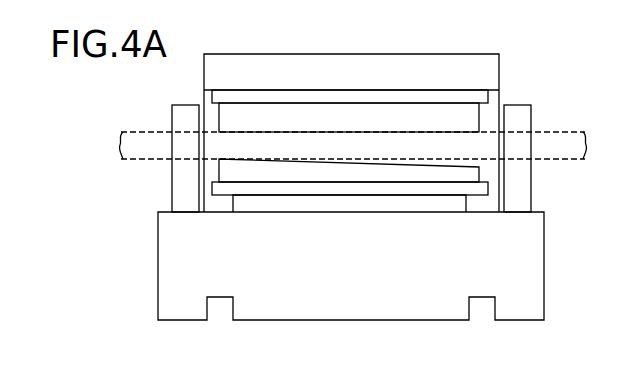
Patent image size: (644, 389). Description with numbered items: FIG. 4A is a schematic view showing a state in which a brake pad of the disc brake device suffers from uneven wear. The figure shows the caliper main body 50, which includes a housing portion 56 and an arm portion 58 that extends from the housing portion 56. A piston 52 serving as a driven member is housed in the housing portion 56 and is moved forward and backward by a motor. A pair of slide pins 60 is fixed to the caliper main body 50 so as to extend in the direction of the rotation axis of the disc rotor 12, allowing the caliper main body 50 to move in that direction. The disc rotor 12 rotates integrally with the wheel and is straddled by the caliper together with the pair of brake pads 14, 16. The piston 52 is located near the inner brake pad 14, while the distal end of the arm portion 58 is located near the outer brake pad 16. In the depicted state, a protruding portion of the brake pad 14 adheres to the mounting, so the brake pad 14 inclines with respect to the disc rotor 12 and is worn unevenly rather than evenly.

The caliper main body 50 is at (141, 257).
The disc rotor 12 is at (561, 138).
The brake pad 14 is at (493, 175).
The brake pad 16 is at (491, 103).
The piston 52 is at (298, 207).
The housing portion 56 is at (532, 268).
The arm portion 58 is at (456, 61).
The slide pin 60 is at (184, 117).